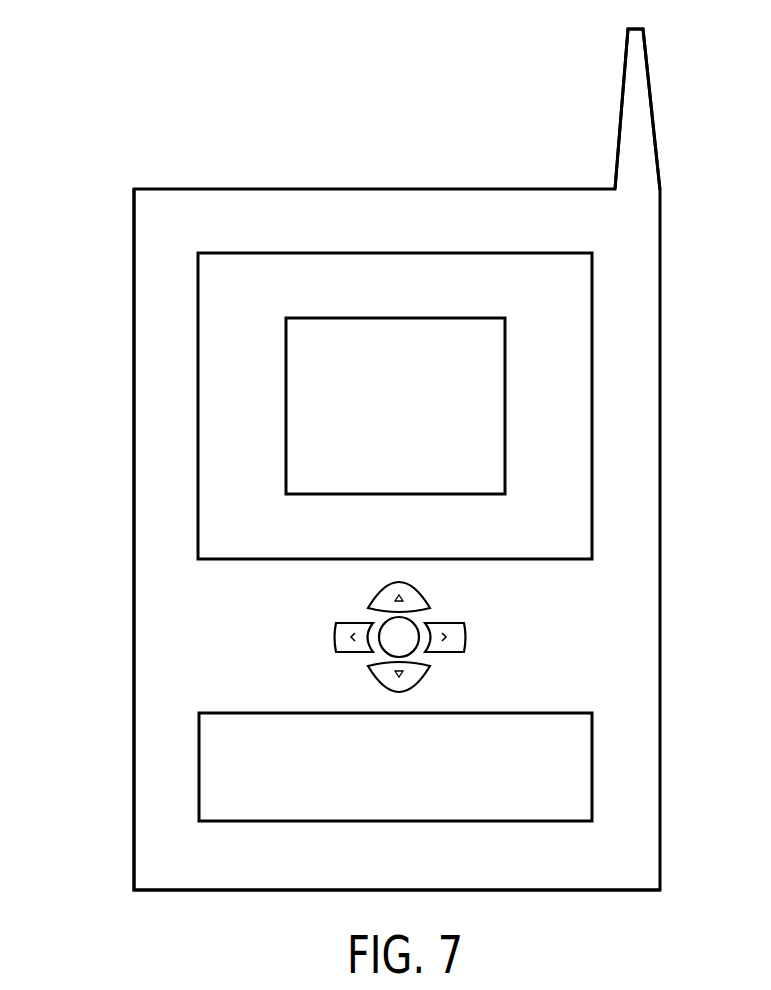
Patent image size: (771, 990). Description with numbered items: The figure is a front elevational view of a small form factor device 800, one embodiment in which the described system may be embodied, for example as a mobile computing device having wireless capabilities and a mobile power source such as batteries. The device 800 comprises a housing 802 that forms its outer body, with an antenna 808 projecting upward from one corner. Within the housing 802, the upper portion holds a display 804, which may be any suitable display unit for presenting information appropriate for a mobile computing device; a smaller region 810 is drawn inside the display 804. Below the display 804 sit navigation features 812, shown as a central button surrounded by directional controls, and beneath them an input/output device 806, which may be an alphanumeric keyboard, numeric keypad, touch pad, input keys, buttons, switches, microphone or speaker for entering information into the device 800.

The small form factor device 800 is at (135, 131).
The housing 802 is at (133, 627).
The display 804 is at (592, 310).
The input/output (I/O) device 806 is at (593, 766).
The antenna 808 is at (622, 107).
The display window / image region 810 is at (397, 318).
The navigation features 812 is at (494, 638).